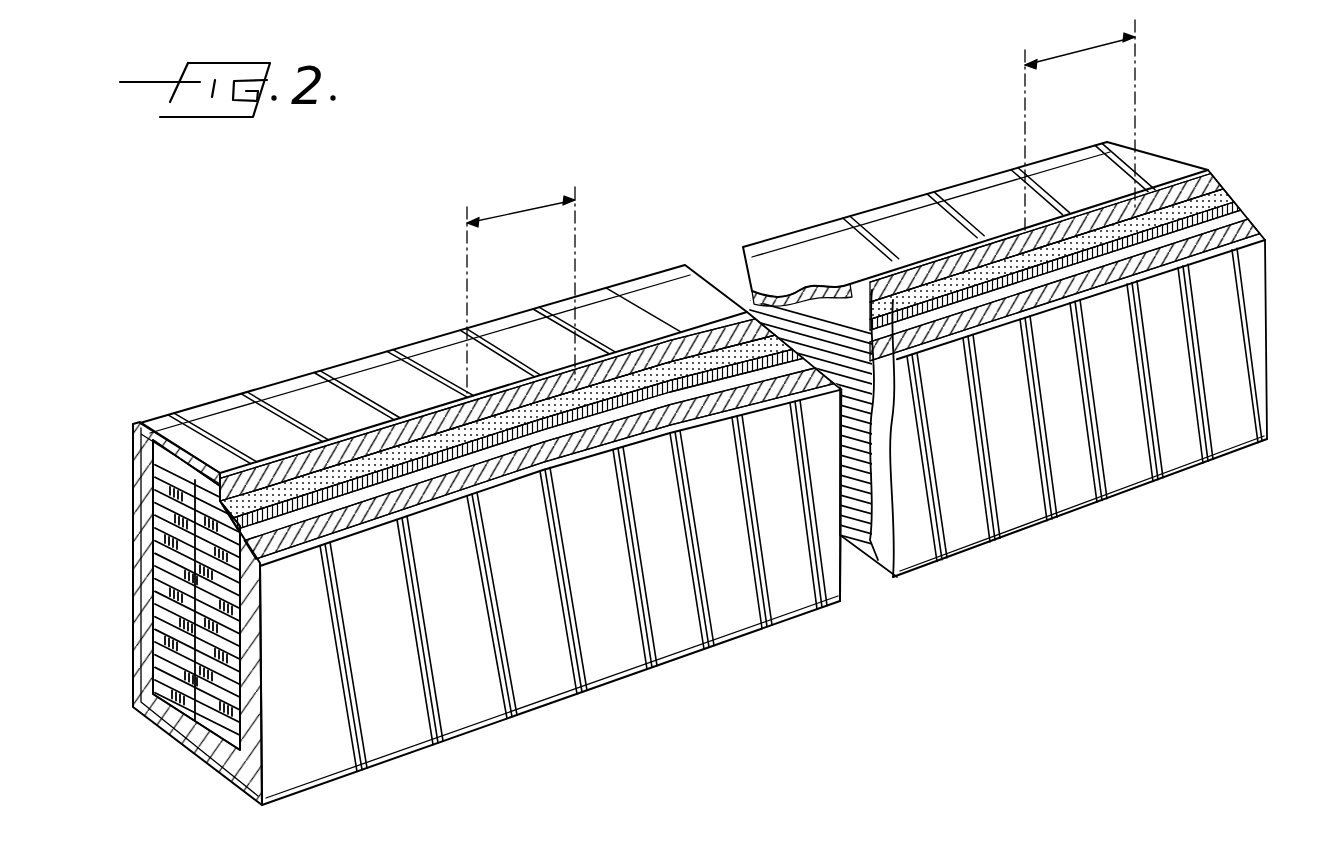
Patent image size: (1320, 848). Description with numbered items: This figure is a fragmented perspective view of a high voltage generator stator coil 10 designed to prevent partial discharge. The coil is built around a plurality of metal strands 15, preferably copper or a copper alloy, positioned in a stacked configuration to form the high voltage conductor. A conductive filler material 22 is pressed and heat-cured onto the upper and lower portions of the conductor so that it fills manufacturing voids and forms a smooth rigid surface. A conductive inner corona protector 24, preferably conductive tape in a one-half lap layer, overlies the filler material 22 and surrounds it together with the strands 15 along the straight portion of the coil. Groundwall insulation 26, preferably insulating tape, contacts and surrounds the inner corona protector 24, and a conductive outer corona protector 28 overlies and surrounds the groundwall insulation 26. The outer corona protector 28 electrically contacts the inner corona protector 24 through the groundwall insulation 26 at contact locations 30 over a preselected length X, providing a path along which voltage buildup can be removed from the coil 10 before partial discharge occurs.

The high voltage generator stator coil 10 is at (685, 230).
The metal strands 15 is at (887, 317).
The conductive filler material 22 is at (293, 477).
The conductive inner corona protector 24 is at (137, 592).
The groundwall insulation 26 is at (136, 544).
The conductive outer corona protector 28 is at (179, 411).
The electrical contact location 30 is at (560, 377).